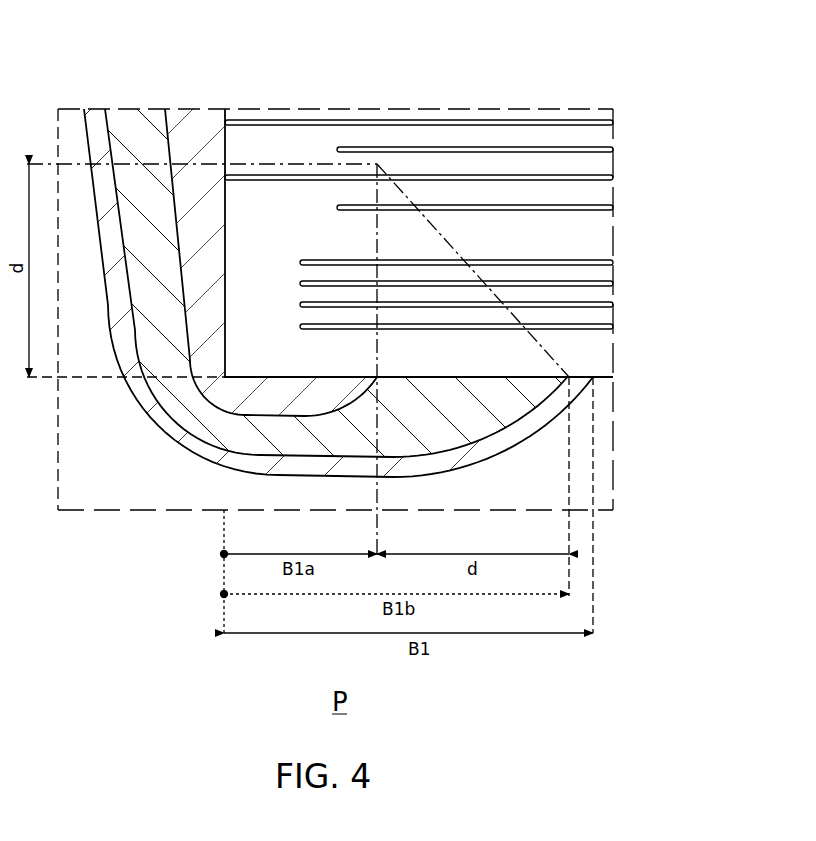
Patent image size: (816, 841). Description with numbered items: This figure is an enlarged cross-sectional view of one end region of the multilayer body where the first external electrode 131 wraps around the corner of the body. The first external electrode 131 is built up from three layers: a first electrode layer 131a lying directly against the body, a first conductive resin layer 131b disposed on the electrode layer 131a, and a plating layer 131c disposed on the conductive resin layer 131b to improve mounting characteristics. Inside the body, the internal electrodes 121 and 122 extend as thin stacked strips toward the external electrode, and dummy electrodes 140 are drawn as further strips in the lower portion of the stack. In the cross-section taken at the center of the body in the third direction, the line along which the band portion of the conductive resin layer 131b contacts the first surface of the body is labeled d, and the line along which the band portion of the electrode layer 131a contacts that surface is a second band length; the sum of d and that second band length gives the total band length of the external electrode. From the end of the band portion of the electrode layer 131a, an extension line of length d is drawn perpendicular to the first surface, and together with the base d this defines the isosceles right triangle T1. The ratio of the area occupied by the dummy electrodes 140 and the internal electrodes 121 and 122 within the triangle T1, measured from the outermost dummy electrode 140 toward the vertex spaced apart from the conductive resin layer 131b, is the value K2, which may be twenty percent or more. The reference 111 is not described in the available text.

The first external electrode 131 is at (210, 48).
The first electrode layer 131a is at (200, 113).
The first conductive resin layer 131b is at (143, 110).
The plating layer 131c is at (93, 113).
The substrate 111 is at (496, 136).
The internal electrode 121 is at (440, 120).
The internal electrode 122 is at (556, 148).
The dummy electrode 140 is at (613, 302).
The isosceles right triangle T1 is at (558, 349).